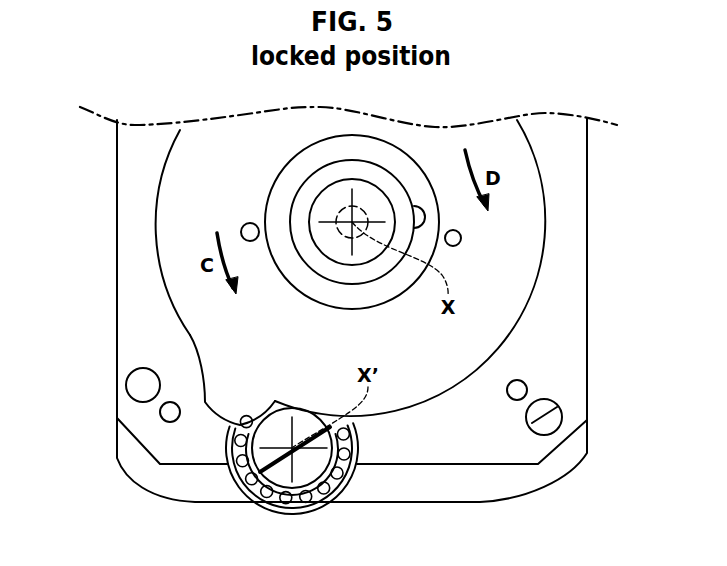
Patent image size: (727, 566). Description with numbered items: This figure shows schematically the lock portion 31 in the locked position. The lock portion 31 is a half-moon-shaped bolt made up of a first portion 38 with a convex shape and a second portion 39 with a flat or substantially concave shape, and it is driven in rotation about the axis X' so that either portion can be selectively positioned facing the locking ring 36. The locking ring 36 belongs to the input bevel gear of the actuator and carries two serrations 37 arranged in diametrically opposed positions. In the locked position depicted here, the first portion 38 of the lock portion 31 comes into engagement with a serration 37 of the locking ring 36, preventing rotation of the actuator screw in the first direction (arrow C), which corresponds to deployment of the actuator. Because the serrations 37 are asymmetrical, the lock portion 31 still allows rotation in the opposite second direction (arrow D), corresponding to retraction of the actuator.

The lock portion 31 is at (283, 430).
The locking ring 36 is at (518, 272).
The serration 37 is at (233, 403).
The first portion 38 is at (273, 413).
The second portion 39 is at (313, 447).